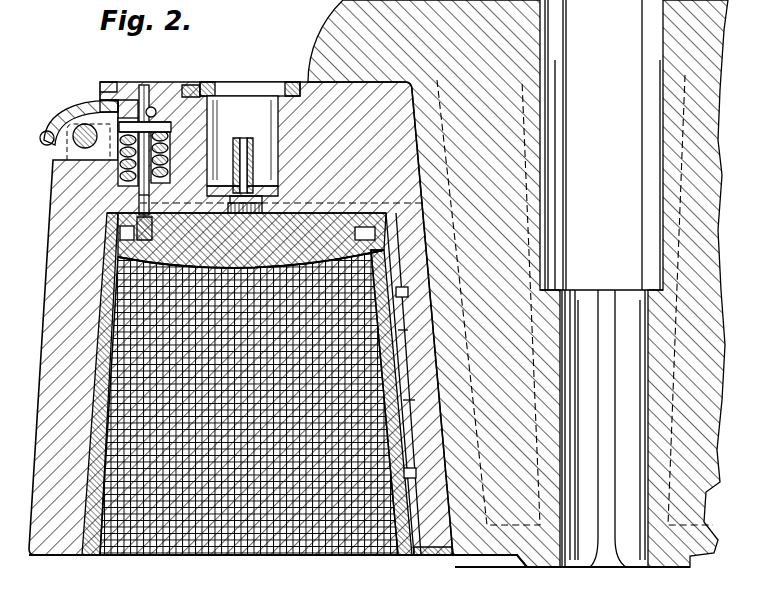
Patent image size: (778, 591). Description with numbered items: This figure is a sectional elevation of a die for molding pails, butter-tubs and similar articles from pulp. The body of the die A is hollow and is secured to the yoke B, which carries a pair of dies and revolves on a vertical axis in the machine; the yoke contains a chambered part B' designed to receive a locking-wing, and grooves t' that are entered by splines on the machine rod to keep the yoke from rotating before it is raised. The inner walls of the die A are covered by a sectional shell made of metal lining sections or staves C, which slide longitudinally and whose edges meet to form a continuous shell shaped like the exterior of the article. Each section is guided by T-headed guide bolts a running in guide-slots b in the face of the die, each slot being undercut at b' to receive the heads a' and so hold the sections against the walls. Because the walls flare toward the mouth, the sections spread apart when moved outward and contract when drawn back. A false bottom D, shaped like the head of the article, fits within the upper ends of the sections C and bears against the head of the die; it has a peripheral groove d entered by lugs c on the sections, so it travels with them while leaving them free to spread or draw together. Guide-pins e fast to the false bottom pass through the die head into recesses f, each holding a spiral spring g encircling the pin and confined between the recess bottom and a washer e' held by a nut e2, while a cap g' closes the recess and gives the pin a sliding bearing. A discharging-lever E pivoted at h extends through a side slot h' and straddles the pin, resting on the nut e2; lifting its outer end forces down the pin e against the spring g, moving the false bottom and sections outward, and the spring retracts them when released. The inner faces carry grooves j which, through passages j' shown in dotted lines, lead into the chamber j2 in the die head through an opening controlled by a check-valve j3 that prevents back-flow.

The body of the die A is at (235, 318).
The yoke B is at (434, 283).
The chambered part of yoke B' is at (634, 283).
The lining sections or staves C is at (88, 556).
The lugs c is at (412, 556).
The false bottom D is at (246, 240).
The discharging-lever E is at (79, 118).
The T-headed guide bolts or pins a is at (413, 384).
The heads of guide-bolts a' is at (424, 386).
The guide-slots b is at (413, 323).
The undercut of guide-slot b' is at (421, 392).
The peripheral groove d is at (354, 233).
The guide-pins e is at (143, 191).
The washer e' is at (159, 128).
The nut e2 is at (190, 86).
The recesses f is at (156, 107).
The spiral spring g is at (171, 154).
The cap g' is at (128, 123).
The pivot of discharging-lever h is at (92, 108).
The side slot h' is at (108, 90).
The grooves j is at (162, 150).
The passages j' is at (282, 197).
The chamber j2 is at (250, 139).
The check-valve j3 is at (250, 176).
The grooves t' is at (572, 428).